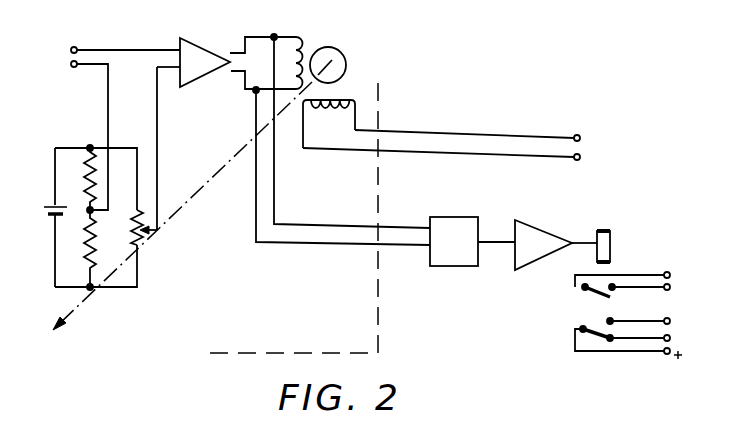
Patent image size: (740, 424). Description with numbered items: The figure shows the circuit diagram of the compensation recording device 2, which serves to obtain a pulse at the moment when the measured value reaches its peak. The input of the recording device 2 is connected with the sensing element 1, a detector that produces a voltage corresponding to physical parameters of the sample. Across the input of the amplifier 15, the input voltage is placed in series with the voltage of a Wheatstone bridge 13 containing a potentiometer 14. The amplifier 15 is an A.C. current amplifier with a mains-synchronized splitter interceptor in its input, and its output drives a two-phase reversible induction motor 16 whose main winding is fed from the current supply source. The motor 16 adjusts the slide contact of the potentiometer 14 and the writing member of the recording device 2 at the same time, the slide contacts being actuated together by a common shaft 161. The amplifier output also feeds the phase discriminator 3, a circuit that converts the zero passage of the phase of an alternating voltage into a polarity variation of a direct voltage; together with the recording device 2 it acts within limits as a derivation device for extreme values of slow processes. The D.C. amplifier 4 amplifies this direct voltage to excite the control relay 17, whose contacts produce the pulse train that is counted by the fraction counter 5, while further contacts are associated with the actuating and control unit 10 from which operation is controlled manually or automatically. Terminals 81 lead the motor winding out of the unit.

The sensing element 1 is at (114, 128).
The recording device 2 is at (378, 350).
The phase discriminator 3 is at (461, 252).
The D.C. amplifier 4 is at (532, 224).
The fraction counter 5 is at (633, 338).
The actuating and control unit 10 is at (637, 284).
The Wheatstone bridge 13 is at (90, 139).
The potentiometer 14 is at (143, 236).
The amplifier 15 is at (212, 33).
The two-phase reversible induction motor 16 is at (346, 71).
The control relay 17 is at (612, 249).
The output terminals 81 is at (582, 146).
The common shaft 161 is at (188, 198).